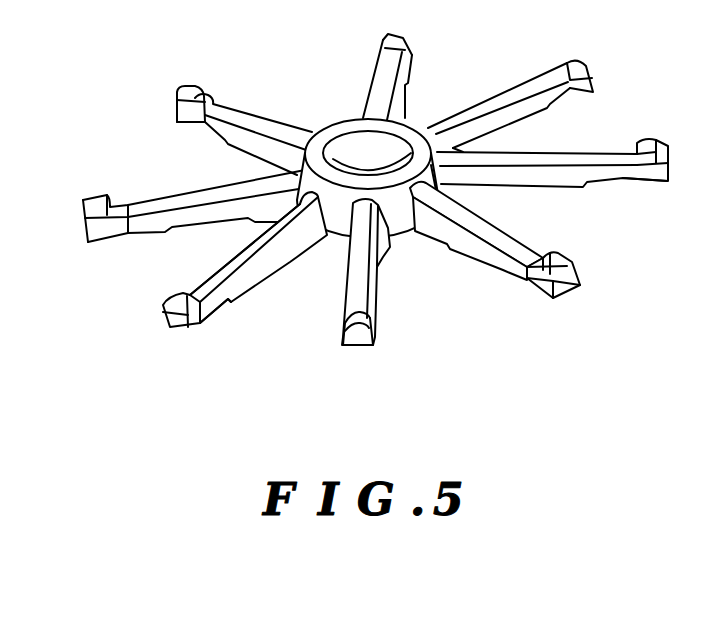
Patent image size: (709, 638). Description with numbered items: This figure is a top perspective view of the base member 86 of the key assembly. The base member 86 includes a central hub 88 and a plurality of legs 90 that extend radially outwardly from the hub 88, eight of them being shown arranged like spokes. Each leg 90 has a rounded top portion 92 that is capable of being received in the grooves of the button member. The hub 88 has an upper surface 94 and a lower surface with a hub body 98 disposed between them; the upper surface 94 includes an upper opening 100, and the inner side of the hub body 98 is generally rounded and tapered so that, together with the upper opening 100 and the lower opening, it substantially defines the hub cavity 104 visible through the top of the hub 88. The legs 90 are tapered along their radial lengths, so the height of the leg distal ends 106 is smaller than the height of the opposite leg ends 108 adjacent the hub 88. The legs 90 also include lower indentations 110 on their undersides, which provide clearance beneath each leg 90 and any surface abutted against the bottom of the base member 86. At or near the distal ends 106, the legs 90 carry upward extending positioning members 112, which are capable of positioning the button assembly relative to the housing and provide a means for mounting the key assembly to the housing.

The base member 86 is at (375, 199).
The hub 88 is at (358, 203).
The legs 90 is at (559, 96).
The rounded top portion 92 is at (257, 245).
The upper surface 94 is at (415, 120).
The hub body 98 is at (445, 183).
The upper opening 100 is at (360, 121).
The hub cavity 104 is at (347, 156).
The leg distal ends 106 is at (255, 278).
The opposite leg ends 108 is at (305, 227).
The lower indentations 110 is at (511, 251).
The upward extending positioning members 112 is at (556, 258).